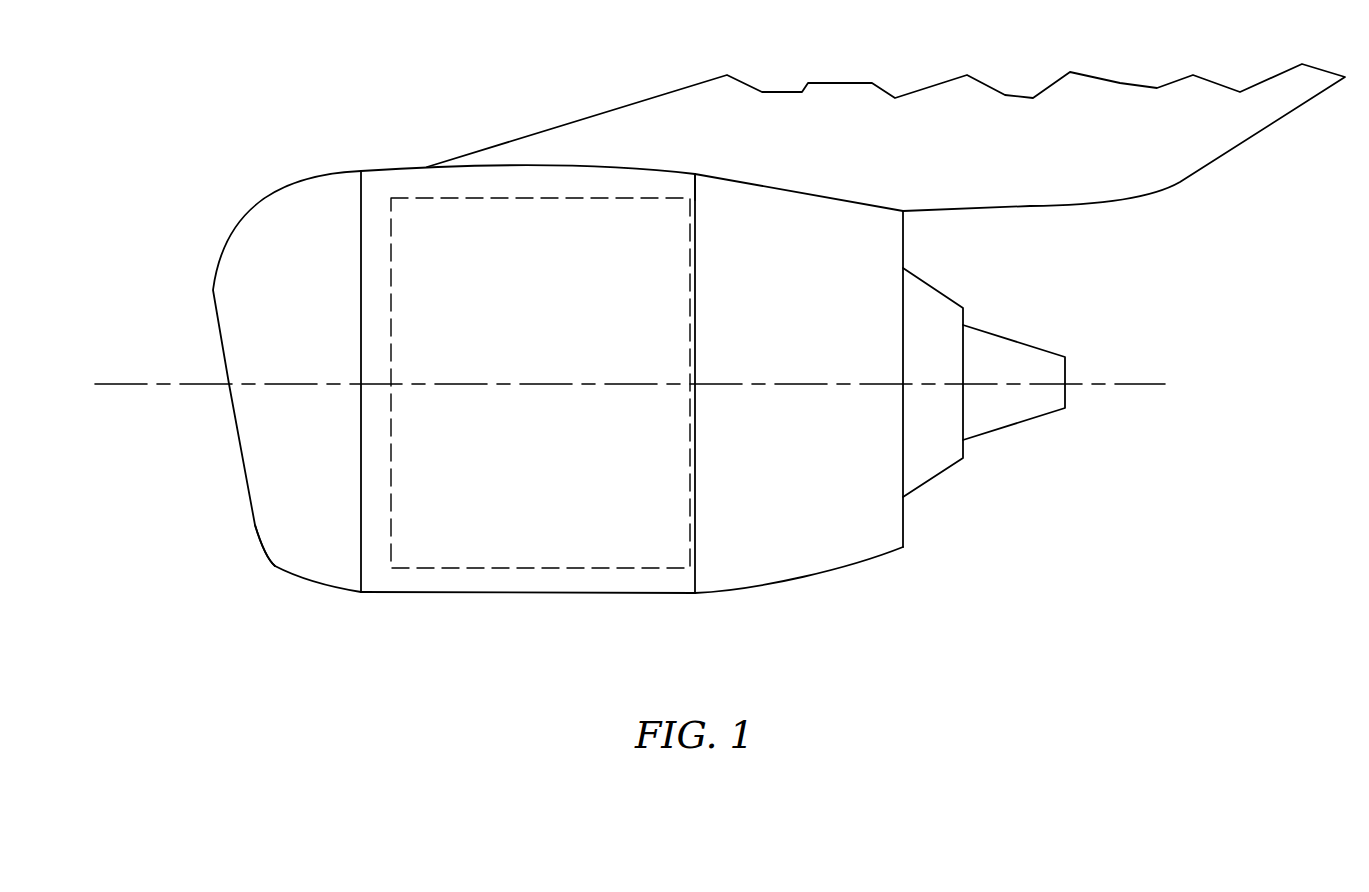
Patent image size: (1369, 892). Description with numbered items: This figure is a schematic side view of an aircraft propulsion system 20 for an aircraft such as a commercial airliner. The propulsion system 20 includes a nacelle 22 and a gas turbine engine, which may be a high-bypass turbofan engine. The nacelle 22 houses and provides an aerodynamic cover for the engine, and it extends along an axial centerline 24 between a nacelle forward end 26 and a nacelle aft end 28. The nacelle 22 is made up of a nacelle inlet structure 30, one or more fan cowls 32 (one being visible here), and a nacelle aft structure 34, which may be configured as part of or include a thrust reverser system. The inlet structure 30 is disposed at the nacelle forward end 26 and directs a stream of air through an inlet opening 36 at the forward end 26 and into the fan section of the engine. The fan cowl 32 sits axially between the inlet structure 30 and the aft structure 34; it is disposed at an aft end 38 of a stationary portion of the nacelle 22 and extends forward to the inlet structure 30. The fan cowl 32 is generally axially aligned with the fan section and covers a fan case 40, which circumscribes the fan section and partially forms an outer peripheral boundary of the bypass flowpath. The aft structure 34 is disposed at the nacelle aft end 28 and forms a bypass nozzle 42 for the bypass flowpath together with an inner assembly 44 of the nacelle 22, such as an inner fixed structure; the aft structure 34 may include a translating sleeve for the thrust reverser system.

The aircraft propulsion system 20 is at (733, 376).
The nacelle 22 is at (593, 379).
The axial centerline 24 is at (1143, 387).
The nacelle forward end 26 is at (241, 395).
The nacelle aft end 28 is at (903, 237).
The nacelle inlet structure 30 is at (273, 563).
The fan cowl 32 is at (490, 599).
The nacelle aft structure 34 is at (792, 585).
The inlet opening 36 is at (218, 348).
The aft end of stationary portion of the nacelle 38 is at (698, 191).
The fan case 40 is at (610, 570).
The bypass nozzle 42 is at (984, 410).
The inner assembly 44 is at (942, 473).